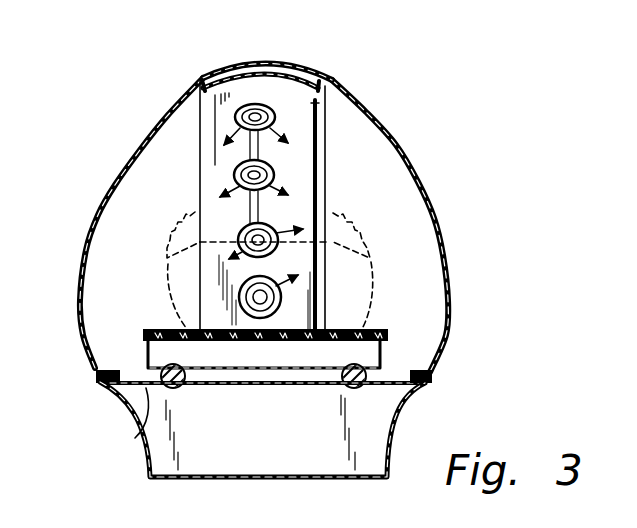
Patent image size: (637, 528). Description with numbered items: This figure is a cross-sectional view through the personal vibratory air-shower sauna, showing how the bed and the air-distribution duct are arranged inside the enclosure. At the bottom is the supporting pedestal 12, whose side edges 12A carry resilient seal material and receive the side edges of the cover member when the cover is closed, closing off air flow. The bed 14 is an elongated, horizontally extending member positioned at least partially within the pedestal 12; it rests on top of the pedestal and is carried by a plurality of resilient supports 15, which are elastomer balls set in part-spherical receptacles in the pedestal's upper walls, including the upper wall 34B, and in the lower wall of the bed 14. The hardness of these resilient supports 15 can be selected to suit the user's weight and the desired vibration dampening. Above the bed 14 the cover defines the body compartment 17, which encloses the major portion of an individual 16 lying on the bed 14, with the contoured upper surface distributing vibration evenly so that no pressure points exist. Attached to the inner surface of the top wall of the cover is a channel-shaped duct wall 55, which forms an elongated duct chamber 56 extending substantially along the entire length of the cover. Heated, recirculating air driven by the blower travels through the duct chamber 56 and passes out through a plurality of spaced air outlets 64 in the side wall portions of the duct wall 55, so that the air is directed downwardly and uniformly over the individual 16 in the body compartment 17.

The supporting pedestal 12 is at (405, 407).
The side edges of the pedestal 12A is at (95, 369).
The bed 14 is at (375, 326).
The resilient supports 15 is at (150, 370).
The individual 16 is at (375, 278).
The body compartment 17 is at (430, 268).
The upper wall of the pedestal 34B is at (135, 438).
The channel-shaped duct wall 55 is at (251, 91).
The duct chamber 56 is at (283, 80).
The air outlets 64 is at (276, 117).